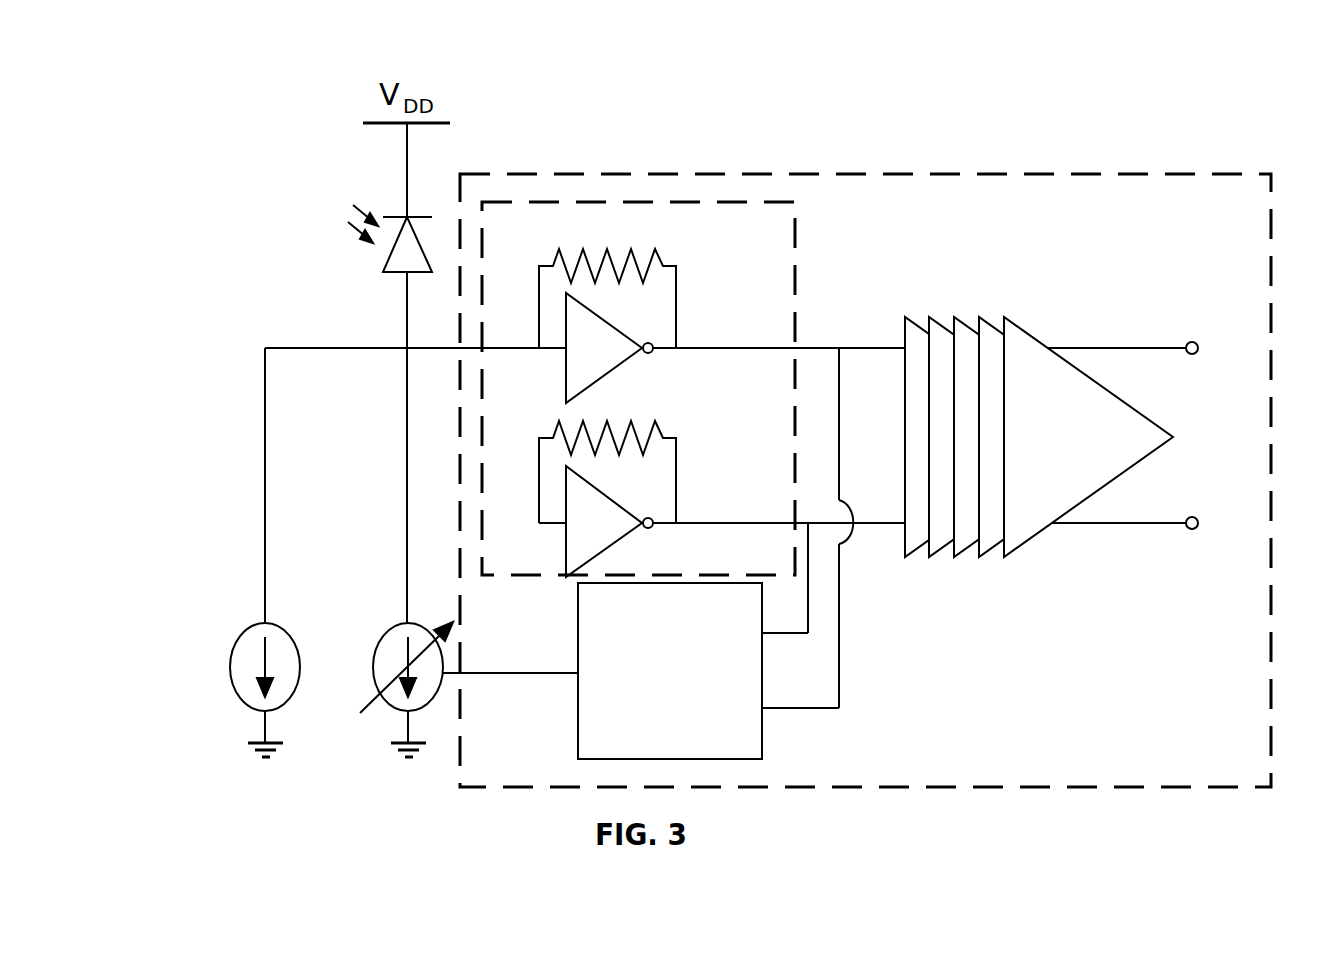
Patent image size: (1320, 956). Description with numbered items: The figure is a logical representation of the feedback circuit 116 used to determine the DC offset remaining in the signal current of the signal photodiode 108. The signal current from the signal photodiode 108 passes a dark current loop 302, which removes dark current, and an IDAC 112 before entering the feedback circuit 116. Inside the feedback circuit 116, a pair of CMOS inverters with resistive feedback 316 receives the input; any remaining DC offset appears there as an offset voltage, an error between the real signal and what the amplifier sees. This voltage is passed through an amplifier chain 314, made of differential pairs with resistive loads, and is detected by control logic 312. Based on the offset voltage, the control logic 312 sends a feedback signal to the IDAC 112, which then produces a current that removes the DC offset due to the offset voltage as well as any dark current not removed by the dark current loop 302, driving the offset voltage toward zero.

The signal photodiode 108 is at (383, 266).
The dark current loop 302 is at (229, 669).
The IDAC 112 is at (368, 679).
The feedback circuit 116 is at (945, 140).
The pair of CMOS inverters with resistive feedback 316 is at (700, 190).
The amplifier chain 314 is at (970, 312).
The control logic 312 is at (720, 694).